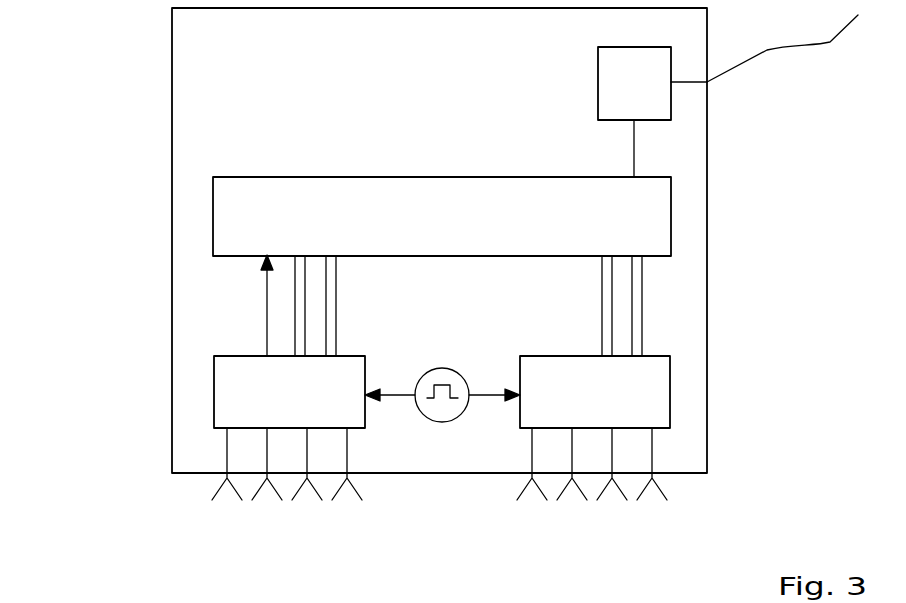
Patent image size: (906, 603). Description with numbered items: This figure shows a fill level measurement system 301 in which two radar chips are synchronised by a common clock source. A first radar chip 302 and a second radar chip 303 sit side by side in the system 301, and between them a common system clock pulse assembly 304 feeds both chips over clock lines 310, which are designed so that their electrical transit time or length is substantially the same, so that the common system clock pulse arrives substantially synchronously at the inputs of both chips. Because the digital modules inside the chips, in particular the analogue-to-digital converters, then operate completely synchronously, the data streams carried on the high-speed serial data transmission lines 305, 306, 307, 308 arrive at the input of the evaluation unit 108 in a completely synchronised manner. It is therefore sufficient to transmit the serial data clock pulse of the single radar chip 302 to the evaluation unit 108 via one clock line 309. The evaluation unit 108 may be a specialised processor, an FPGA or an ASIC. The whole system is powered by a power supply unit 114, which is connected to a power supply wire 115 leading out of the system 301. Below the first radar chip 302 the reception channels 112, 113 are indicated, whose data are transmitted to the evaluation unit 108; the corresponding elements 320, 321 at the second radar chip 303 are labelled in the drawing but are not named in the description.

The system 301 is at (171, 58).
The evaluation unit 108 is at (298, 177).
The power supply unit 114 is at (598, 78).
The power supply wire 115 is at (780, 50).
The first radar chip 302 is at (213, 382).
The second radar chip 303 is at (670, 400).
The common system clock pulse assembly 304 is at (450, 368).
The high-speed serial data transmission line 305 is at (306, 293).
The high-speed serial data transmission line 306 is at (336, 338).
The high-speed serial data transmission line 307 is at (612, 288).
The high-speed serial data transmission line 308 is at (640, 338).
The clock line 309 is at (265, 312).
The clock lines 310 is at (405, 397).
The reception channel 112 is at (227, 455).
The reception channel 113 is at (267, 455).
The probe contact 320 is at (612, 450).
The probe contact 321 is at (652, 448).